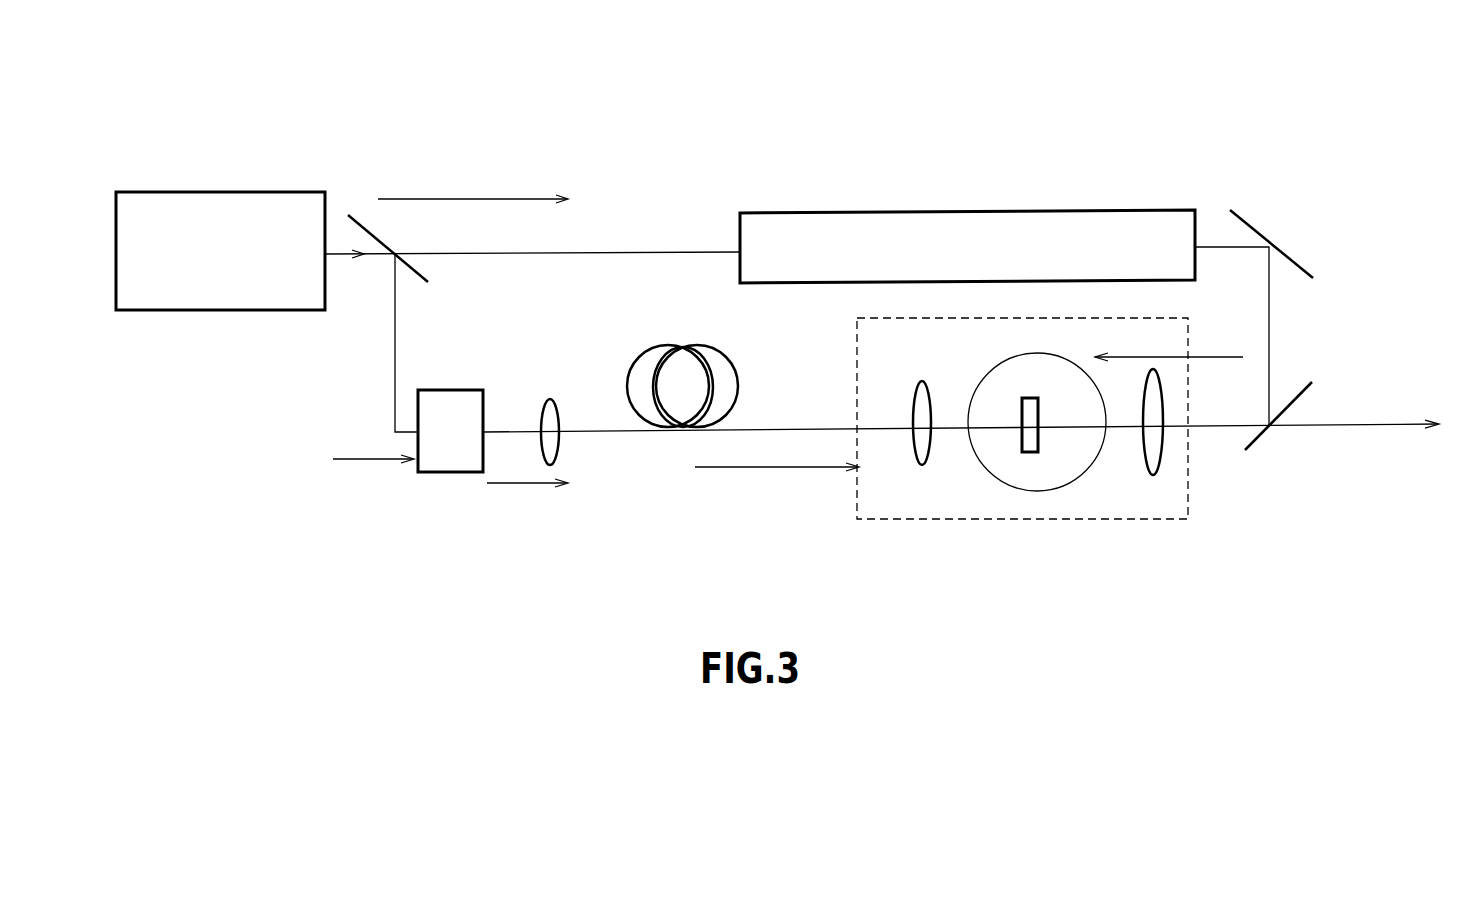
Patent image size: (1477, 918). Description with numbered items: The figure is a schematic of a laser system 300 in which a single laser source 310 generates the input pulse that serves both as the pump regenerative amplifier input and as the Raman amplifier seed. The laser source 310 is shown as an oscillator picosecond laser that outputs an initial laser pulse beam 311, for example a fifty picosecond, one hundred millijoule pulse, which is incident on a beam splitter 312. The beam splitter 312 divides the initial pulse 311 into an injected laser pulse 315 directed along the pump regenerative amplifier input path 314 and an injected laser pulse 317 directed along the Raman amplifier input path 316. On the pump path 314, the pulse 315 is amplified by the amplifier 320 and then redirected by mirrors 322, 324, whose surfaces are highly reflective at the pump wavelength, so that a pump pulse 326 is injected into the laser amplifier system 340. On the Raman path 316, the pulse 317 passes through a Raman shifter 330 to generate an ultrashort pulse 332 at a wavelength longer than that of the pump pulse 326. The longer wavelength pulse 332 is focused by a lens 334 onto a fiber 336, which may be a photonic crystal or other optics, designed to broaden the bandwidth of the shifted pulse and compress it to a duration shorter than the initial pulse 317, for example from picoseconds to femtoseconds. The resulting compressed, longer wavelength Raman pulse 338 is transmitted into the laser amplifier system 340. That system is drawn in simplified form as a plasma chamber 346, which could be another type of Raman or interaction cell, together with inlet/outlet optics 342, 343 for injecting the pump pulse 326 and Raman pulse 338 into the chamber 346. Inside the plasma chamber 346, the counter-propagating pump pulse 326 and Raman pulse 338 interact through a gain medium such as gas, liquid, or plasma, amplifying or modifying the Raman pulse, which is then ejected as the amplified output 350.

The laser system 300 is at (190, 98).
The laser source 310 is at (193, 192).
The initial laser pulse beam 311 is at (342, 257).
The beam splitter 312 is at (348, 215).
The pump regenerative amplifier input path 314 is at (467, 253).
The injected laser pulse 315 is at (477, 199).
The Raman amplifier input path 316 is at (395, 332).
The injected laser pulse 317 is at (362, 457).
The amplifier 320 is at (890, 213).
The mirror 322 is at (1257, 232).
The mirror 324 is at (1313, 393).
The pump pulse 326 is at (1207, 357).
The Raman shifter 330 is at (452, 390).
The ultrashort pulse 332 is at (530, 482).
The lens 334 is at (550, 400).
The fiber 336 is at (682, 345).
The Raman pulse 338 is at (710, 467).
The laser amplifier system 340 is at (855, 333).
The inlet/outlet optics 342 is at (925, 382).
The inlet/outlet optics 343 is at (1158, 468).
The plasma chamber 346 is at (1007, 485).
The amplified output 350 is at (1402, 423).